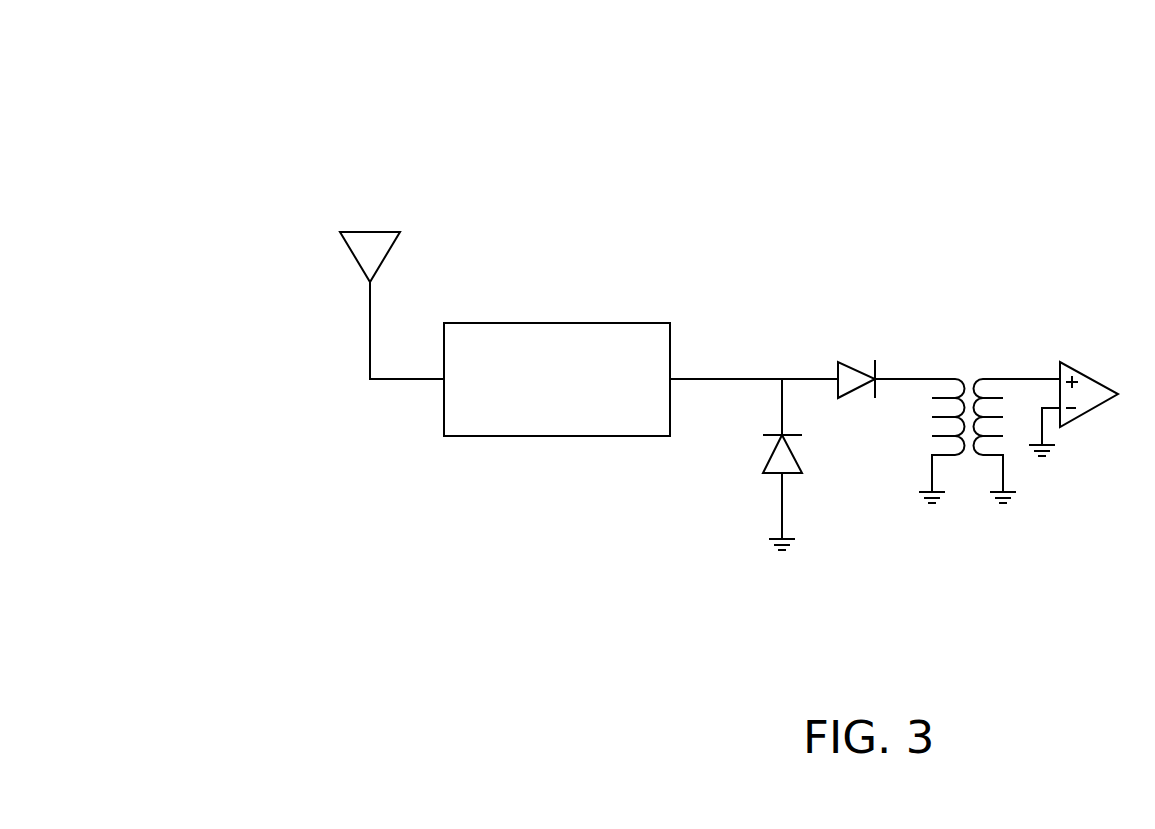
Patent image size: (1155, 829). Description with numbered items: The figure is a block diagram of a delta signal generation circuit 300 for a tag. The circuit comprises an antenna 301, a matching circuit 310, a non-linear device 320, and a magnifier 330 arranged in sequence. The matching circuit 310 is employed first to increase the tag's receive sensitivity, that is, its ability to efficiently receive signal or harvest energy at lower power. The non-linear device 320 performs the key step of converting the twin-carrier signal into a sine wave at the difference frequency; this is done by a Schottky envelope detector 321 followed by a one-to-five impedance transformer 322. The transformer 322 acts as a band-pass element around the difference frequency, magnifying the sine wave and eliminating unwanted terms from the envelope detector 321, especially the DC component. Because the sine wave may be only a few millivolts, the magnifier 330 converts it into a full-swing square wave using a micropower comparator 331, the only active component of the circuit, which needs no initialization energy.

The delta signal generation circuit 300 is at (292, 69).
The antenna 301 is at (336, 227).
The matching circuit 310 is at (538, 410).
The non-linear device 320 is at (766, 270).
The Schottky envelope detector 321 is at (830, 352).
The impedance transformer 322 is at (958, 347).
The magnifier 330 is at (1061, 351).
The micropower comparator 331 is at (1061, 275).